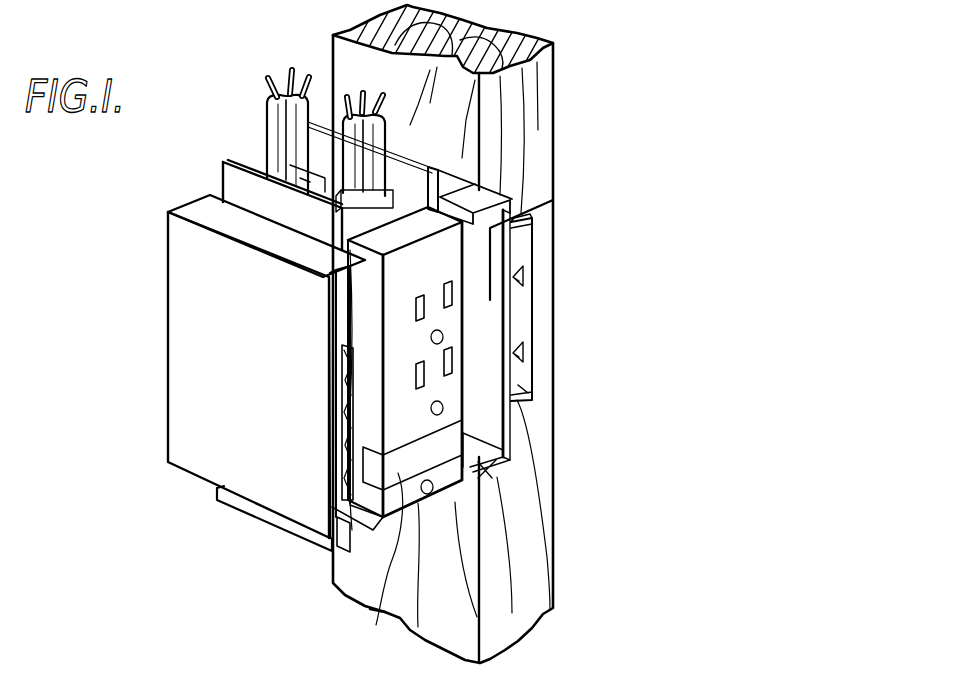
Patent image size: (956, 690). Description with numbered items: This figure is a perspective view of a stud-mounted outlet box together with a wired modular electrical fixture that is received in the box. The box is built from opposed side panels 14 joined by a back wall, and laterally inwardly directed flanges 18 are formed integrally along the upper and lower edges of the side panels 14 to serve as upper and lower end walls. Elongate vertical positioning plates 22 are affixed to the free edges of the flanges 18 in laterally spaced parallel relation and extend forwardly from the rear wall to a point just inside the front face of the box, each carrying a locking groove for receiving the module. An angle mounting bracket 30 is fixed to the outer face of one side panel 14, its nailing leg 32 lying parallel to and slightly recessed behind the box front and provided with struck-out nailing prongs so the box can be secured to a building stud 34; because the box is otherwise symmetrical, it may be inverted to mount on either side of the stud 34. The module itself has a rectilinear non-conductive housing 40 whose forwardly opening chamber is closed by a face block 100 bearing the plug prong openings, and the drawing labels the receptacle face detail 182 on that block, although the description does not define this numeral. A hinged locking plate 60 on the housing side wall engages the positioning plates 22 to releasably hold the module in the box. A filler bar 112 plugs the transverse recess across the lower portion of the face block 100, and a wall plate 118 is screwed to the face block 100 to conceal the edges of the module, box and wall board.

The side panel 14 is at (180, 382).
The flange 18 is at (230, 225).
The positioning plate 22 is at (242, 190).
The angle mounting bracket 30 is at (542, 320).
The nailing leg 32 is at (525, 390).
The building stud 34 is at (540, 553).
The module housing 40 is at (401, 206).
The locking plate 60 is at (338, 388).
The face block 100 is at (356, 368).
The filler bar 112 is at (376, 625).
The wall plate 118 is at (352, 523).
The receptacle slots 182 is at (424, 332).